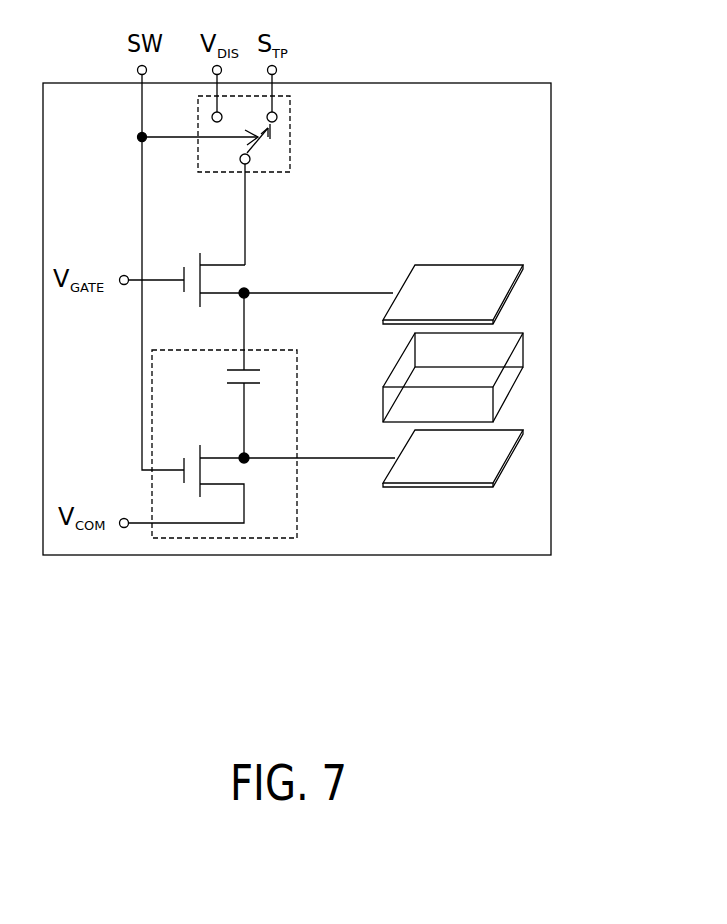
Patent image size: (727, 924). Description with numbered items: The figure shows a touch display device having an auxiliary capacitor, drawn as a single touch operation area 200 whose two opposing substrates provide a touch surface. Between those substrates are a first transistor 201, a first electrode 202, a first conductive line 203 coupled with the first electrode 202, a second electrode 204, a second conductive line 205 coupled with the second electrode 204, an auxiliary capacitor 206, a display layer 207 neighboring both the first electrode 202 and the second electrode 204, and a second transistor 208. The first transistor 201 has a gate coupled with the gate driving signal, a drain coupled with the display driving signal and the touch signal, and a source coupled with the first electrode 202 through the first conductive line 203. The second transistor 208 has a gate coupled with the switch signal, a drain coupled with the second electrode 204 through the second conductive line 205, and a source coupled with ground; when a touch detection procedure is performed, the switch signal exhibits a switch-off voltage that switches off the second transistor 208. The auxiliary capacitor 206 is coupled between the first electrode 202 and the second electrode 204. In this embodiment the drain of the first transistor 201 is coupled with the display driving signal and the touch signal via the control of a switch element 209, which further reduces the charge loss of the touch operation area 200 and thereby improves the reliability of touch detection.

The touch operation area 200 is at (412, 83).
The first transistor 201 is at (190, 295).
The first electrode 202 is at (458, 265).
The first conductive line 203 is at (378, 290).
The second electrode 204 is at (510, 463).
The second conductive line 205 is at (347, 455).
The auxiliary capacitor 206 is at (260, 373).
The display layer 207 is at (525, 348).
The second transistor 208 is at (183, 452).
The switch element 209 is at (260, 153).